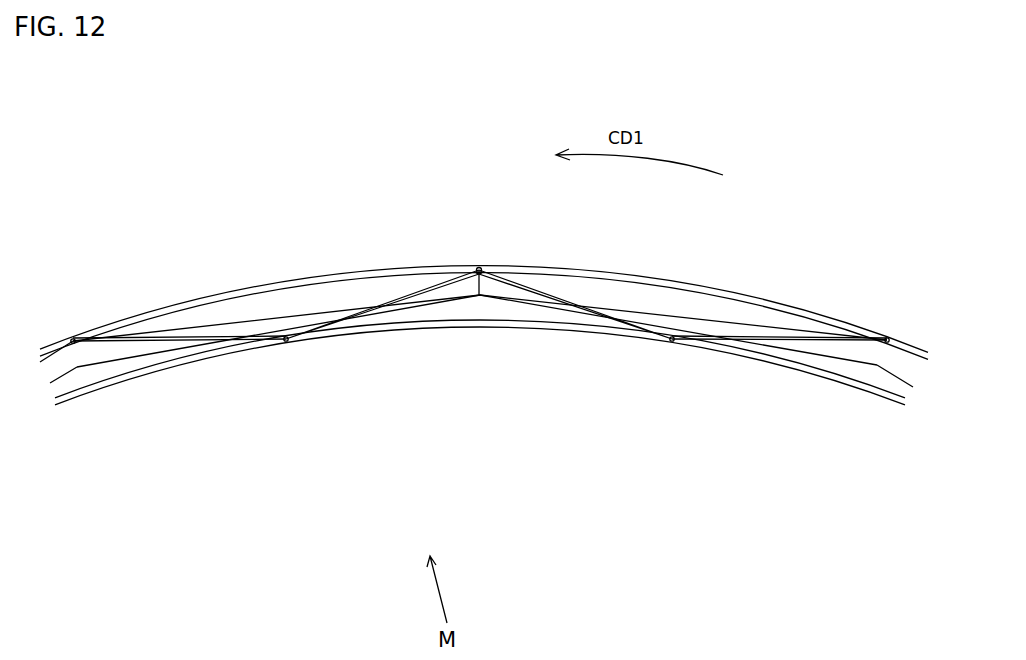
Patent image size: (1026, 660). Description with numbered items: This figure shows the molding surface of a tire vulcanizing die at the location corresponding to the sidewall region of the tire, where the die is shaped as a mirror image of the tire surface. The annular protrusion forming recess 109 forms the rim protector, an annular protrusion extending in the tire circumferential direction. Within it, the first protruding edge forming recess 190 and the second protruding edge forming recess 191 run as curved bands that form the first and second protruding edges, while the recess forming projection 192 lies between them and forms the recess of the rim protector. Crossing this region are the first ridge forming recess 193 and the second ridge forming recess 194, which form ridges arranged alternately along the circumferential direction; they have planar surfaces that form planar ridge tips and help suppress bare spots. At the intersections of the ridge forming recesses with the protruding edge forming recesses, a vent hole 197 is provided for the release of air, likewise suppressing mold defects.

The annular protrusion forming recess 109 is at (306, 233).
The first protruding edge forming recess 190 is at (393, 269).
The second protruding edge forming recess 191 is at (437, 329).
The recess forming projection 192 is at (245, 298).
The first ridge forming recess 193 is at (422, 292).
The second ridge forming recess 194 is at (124, 338).
The vent hole 197 is at (73, 338).